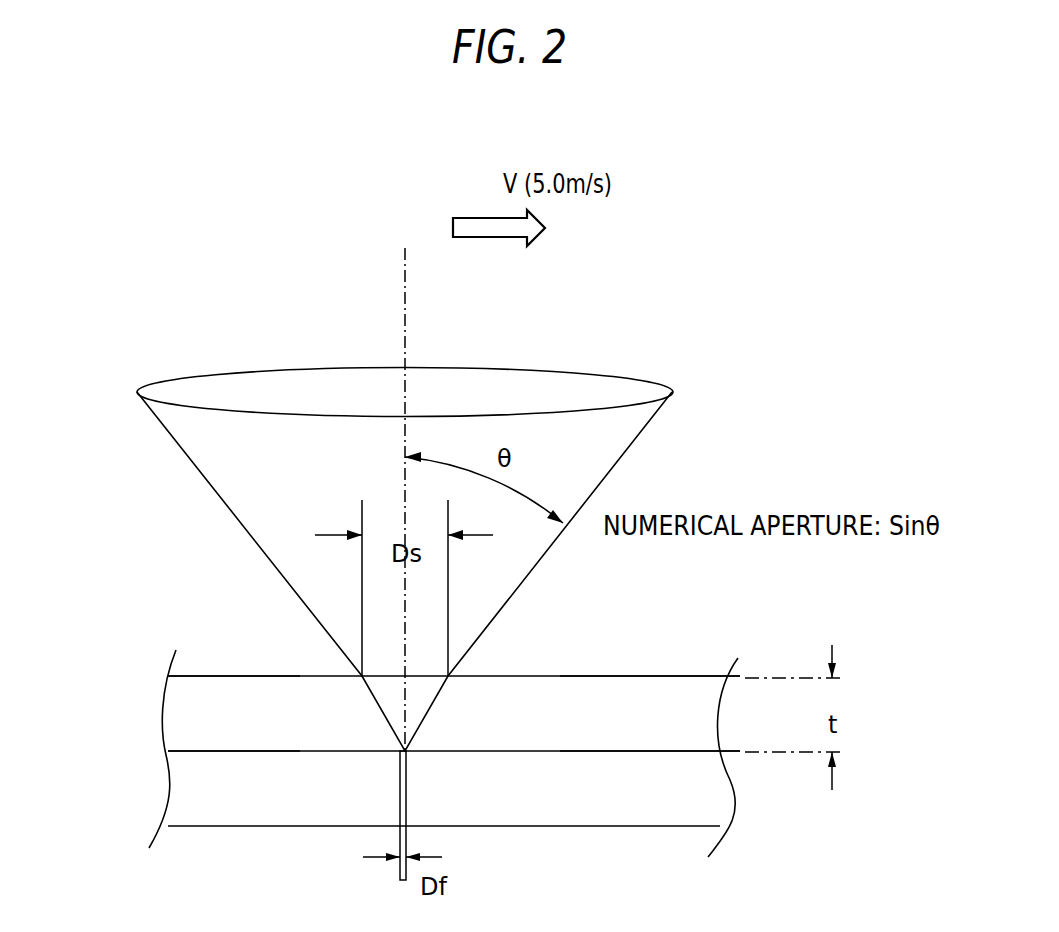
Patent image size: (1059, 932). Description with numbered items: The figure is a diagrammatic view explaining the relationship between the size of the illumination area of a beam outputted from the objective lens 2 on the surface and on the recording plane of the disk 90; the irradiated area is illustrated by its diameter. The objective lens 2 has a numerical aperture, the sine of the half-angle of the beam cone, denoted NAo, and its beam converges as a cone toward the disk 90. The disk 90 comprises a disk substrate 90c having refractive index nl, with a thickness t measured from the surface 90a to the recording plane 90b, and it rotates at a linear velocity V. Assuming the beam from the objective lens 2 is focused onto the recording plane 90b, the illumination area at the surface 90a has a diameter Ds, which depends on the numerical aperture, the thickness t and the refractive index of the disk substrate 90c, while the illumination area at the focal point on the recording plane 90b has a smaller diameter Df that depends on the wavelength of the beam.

The objective lens 2 is at (595, 372).
The disk 90 is at (403, 741).
The surface 90a is at (672, 676).
The recording plane 90b is at (563, 751).
The disk substrate 90c is at (180, 714).